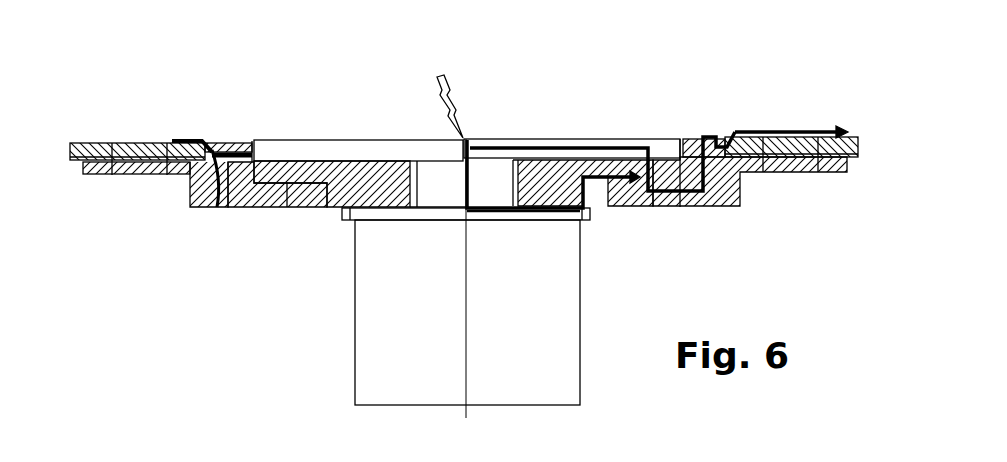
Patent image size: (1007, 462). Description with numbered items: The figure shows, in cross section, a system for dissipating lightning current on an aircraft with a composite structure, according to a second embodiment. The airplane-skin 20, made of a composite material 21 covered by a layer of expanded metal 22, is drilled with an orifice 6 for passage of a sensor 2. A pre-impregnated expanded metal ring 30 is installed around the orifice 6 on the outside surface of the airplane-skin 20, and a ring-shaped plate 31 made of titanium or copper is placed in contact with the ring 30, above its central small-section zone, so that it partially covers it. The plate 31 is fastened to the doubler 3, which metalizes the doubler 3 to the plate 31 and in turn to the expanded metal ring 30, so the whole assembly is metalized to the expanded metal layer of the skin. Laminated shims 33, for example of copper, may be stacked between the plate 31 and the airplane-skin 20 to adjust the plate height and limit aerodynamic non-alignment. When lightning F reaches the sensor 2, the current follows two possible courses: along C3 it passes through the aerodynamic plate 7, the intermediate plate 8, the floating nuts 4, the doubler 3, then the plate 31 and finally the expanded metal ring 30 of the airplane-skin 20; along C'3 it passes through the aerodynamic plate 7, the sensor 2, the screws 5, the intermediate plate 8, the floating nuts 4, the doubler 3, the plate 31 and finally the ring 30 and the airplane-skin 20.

The airplane-skin 20 is at (50, 65).
The layer of expanded metal 22 is at (85, 143).
The composite material 21 is at (120, 143).
The expanded metal ring 30 is at (186, 140).
The ring-shaped plate 31 is at (220, 143).
The laminated shims 33 is at (197, 207).
The doubler 3 is at (216, 207).
The floating nuts 4 is at (287, 207).
The aerodynamic plate 7 is at (318, 140).
The intermediate plate 8 is at (378, 162).
The lightning F is at (534, 237).
The orifice 6 is at (687, 137).
The course of the lightning C3 is at (785, 131).
The screws 5 is at (343, 220).
The course of the lightning C'3 is at (523, 249).
The sensor 2 is at (467, 312).